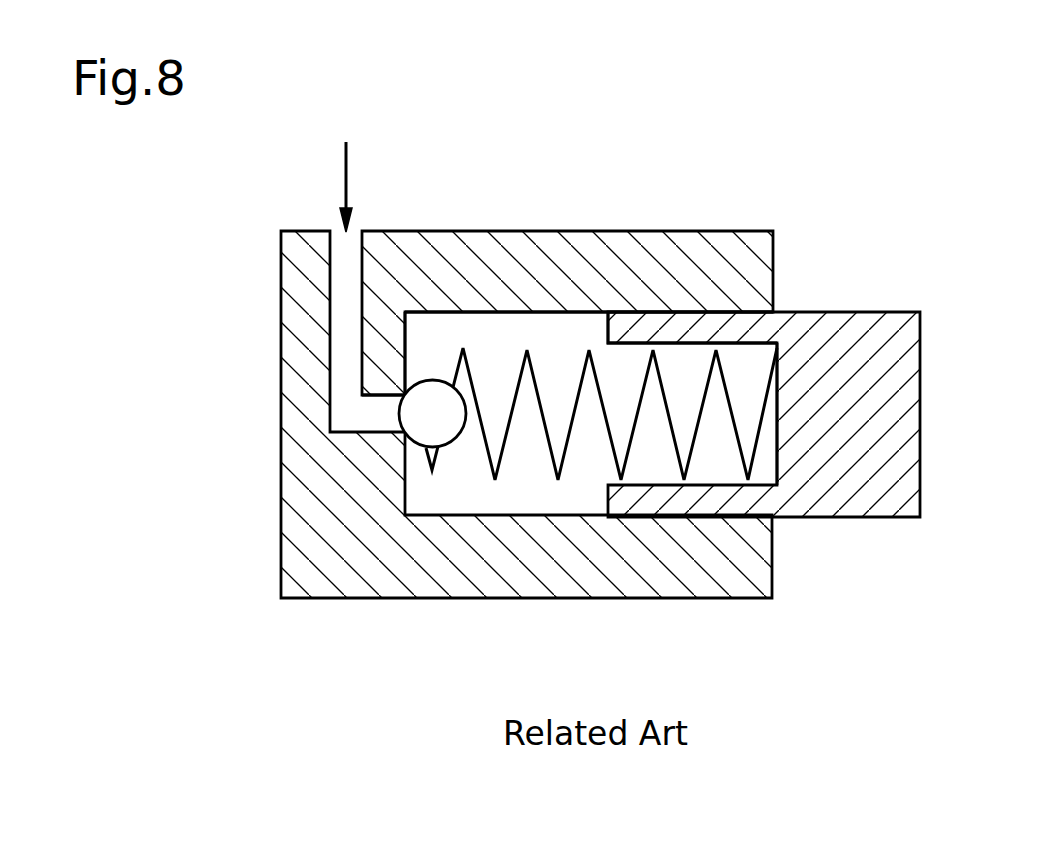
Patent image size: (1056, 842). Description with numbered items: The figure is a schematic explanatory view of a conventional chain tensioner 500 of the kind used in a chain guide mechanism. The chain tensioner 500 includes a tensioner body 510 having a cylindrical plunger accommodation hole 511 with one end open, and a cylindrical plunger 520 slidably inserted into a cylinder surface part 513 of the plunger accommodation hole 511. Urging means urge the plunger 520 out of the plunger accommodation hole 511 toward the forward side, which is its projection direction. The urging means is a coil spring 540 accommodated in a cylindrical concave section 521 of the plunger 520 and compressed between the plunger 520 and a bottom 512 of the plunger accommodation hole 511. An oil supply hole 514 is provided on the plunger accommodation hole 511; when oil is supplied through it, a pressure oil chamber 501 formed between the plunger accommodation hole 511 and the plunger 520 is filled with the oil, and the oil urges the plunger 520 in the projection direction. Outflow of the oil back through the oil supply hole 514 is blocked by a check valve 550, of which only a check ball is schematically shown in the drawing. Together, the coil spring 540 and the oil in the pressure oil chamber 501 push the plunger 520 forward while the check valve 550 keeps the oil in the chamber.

The chain tensioner 500 is at (898, 135).
The pressure oil chamber 501 is at (525, 452).
The tensioner body 510 is at (444, 565).
The plunger accommodation hole 511 is at (600, 127).
The bottom 512 is at (410, 342).
The cylinder surface part 513 is at (582, 320).
The oil supply hole 514 is at (347, 166).
The plunger 520 is at (898, 447).
The cylindrical concave section 521 is at (707, 355).
The coil spring 540 is at (698, 432).
The check valve 550 is at (400, 412).